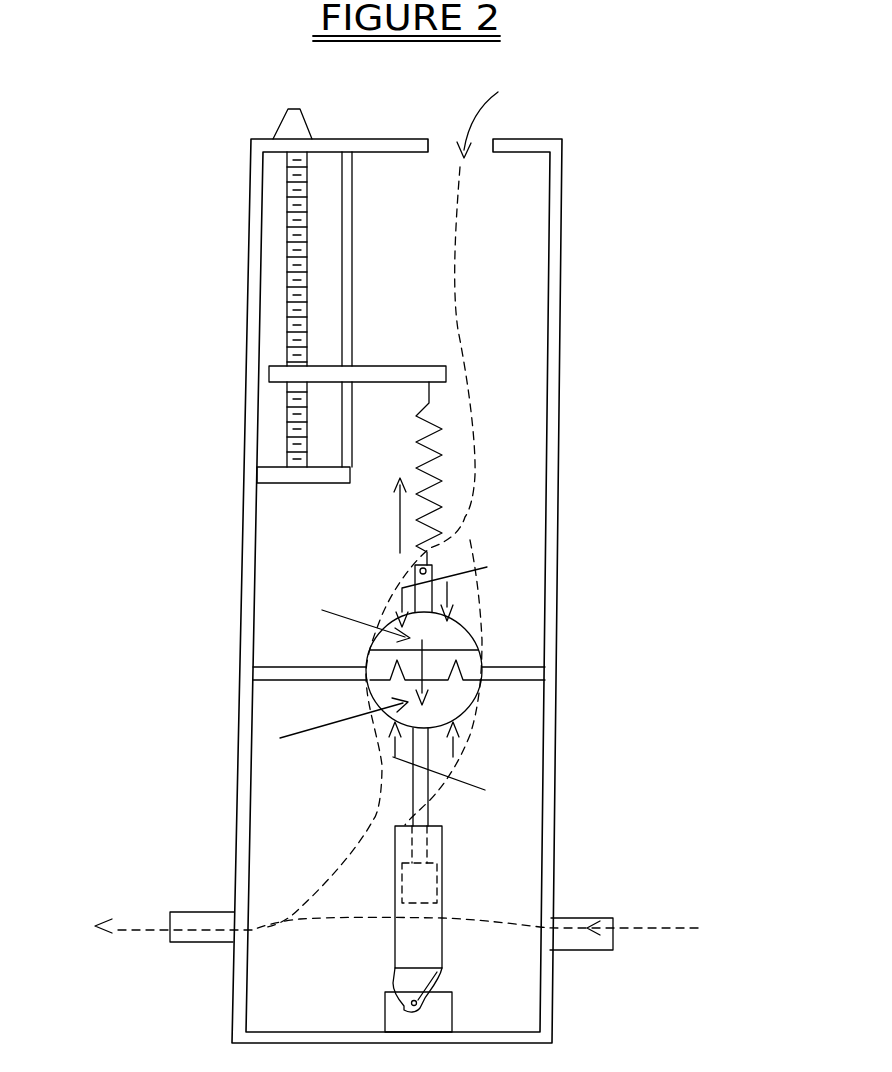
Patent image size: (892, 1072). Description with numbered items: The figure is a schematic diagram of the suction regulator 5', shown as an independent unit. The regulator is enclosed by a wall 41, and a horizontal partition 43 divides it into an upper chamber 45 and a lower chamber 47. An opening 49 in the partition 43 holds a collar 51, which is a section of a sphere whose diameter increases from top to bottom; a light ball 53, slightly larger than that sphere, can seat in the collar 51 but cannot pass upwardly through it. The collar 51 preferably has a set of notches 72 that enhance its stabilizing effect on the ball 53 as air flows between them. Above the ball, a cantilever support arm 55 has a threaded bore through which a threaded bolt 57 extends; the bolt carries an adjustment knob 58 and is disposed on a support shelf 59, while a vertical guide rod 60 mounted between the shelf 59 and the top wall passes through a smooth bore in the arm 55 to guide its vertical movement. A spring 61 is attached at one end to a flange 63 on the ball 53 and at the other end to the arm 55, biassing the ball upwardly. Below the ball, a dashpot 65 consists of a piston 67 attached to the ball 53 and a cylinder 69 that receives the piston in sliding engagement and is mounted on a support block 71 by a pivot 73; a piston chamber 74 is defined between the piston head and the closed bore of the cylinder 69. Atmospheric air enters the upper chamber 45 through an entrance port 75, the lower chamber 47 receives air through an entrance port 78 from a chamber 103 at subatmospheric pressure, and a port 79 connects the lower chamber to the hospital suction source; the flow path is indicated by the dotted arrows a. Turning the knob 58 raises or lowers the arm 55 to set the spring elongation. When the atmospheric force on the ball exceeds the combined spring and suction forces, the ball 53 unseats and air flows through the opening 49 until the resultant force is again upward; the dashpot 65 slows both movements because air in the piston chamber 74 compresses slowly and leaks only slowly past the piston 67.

The suction regulator 5' is at (398, 562).
The wall 41 is at (247, 445).
The horizontal partition 43 is at (258, 674).
The upper chamber 45 is at (403, 302).
The lower chamber 47 is at (314, 977).
The opening 49 is at (368, 654).
The collar 51 is at (478, 662).
The light ball 53 is at (375, 704).
The cantilever support arm 55 is at (373, 368).
The threaded bolt 57 is at (308, 272).
The adjustment knob 58 is at (310, 122).
The support shelf 59 is at (313, 473).
The vertical guide rod 60 is at (355, 262).
The spring 61 is at (427, 415).
The flange 63 is at (412, 568).
The dashpot 65 is at (483, 874).
The piston 67 is at (402, 884).
The cylinder 69 is at (446, 960).
The support block 71 is at (457, 1019).
The notches 72 is at (385, 668).
The pivot 73 is at (440, 972).
The piston chamber 74 is at (393, 937).
The entrance port 75 is at (438, 140).
The entrance port 78 is at (588, 916).
The port 79 is at (176, 944).
The chamber 103 is at (640, 993).
The dotted arrows a is at (462, 308).